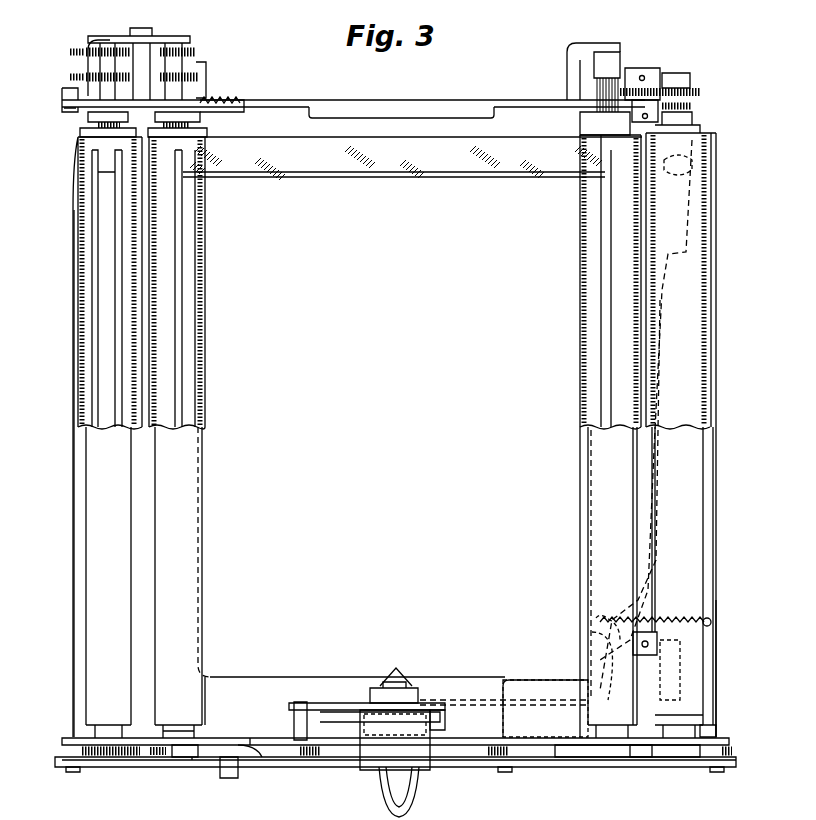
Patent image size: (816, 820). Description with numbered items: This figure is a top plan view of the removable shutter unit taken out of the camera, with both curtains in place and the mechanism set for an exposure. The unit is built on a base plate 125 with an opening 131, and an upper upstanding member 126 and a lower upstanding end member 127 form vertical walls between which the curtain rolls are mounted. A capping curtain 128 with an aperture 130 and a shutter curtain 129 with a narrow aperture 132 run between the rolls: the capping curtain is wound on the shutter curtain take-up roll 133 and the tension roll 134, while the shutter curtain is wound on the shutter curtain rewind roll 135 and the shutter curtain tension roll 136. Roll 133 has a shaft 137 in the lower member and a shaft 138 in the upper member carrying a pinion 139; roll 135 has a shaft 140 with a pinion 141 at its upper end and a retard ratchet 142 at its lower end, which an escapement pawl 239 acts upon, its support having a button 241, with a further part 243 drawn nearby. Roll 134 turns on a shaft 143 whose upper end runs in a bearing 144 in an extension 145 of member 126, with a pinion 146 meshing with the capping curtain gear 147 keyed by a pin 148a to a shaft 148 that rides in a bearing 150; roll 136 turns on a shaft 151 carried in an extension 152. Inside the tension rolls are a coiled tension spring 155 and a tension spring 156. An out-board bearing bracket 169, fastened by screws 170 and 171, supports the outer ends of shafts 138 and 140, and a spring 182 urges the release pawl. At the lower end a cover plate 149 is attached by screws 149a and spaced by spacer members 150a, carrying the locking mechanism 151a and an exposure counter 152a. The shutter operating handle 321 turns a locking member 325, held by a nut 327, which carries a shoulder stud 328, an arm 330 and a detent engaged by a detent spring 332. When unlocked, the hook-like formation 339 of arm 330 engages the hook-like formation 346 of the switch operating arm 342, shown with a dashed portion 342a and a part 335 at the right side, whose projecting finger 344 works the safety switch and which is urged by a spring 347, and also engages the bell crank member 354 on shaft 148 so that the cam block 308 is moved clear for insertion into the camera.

The base plate 125 is at (76, 512).
The upper upstanding member 126 is at (366, 100).
The lower upstanding end member 127 is at (224, 738).
The capping curtain 128 is at (380, 172).
The shutter curtain 129 is at (80, 308).
The aperture 130 is at (186, 352).
The opening 131 is at (248, 508).
The aperture 132 is at (103, 206).
The shutter curtain take-up roll 133 is at (186, 566).
The tension roll 134 is at (594, 544).
The shutter curtain rewind roll 135 is at (100, 556).
The shutter curtain tension roll 136 is at (690, 548).
The shaft 137 is at (184, 760).
The shaft 138 is at (176, 52).
The pinion 139 is at (188, 86).
The shaft 140 is at (100, 66).
The pinion 141 is at (108, 47).
The retard ratchet 142 is at (110, 758).
The shaft 143 is at (596, 128).
The bearing 144 is at (614, 58).
The extension 145 is at (567, 56).
The pinion 146 is at (596, 110).
The capping curtain gear 147 is at (700, 90).
The shaft 148 is at (645, 506).
The pin 148a is at (648, 68).
The cover plate 149 is at (584, 762).
The screws 149a is at (72, 770).
The bearing 150 is at (644, 760).
The spacer members 150a is at (300, 760).
The shaft 151 is at (694, 124).
The locking mechanism 151a is at (403, 663).
The extension 152 is at (694, 106).
The exposure counter 152a is at (552, 680).
The coiled tension spring 155 is at (72, 80).
The tension spring 156 is at (72, 54).
The out-board bearing bracket 169 is at (88, 40).
The screw 170 is at (66, 98).
The screw 171 is at (144, 28).
The spring 182 is at (216, 124).
The escapement pawl 239 is at (154, 758).
The button 241 is at (230, 778).
The lever 243 is at (258, 757).
The cam block 308 is at (680, 74).
The shutter operating handle 321 is at (410, 816).
The locking member 325 is at (458, 726).
The nut 327 is at (375, 690).
The shoulder stud 328 is at (318, 700).
The arm 330 is at (476, 686).
The detent spring 332 is at (344, 760).
The wall 335 is at (708, 680).
The hook-like formation 339 is at (600, 620).
The switch operating arm 342 is at (660, 392).
The belt loop 342a is at (694, 160).
The projecting finger 344 is at (700, 270).
The hook-like formation 346 is at (592, 634).
The spring 347 is at (672, 620).
The bell crank member 354 is at (650, 660).